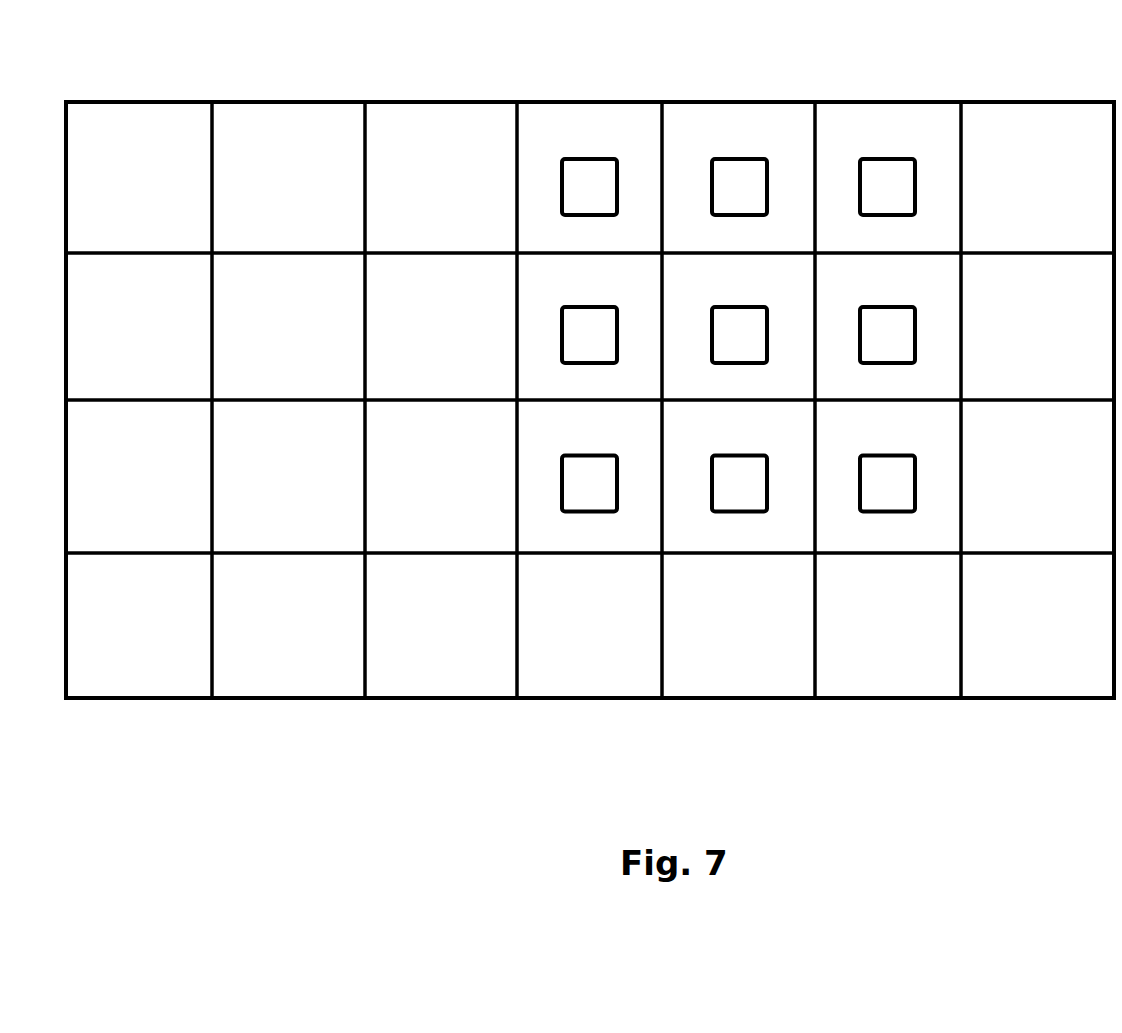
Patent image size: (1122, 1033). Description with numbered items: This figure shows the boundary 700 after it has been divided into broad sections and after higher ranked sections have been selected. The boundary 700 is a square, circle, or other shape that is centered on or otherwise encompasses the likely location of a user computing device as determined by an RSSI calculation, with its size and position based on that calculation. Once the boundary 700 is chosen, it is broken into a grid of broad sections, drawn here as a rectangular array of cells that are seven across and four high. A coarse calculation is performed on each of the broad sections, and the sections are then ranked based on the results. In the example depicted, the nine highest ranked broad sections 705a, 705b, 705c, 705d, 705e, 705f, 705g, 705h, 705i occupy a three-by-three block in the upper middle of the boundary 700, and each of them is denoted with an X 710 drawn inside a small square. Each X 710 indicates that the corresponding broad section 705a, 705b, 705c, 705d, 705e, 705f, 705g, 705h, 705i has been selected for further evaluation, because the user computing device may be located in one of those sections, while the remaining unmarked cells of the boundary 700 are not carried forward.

The boundary 700 is at (123, 88).
The broad section 705a is at (582, 122).
The broad section 705b is at (723, 164).
The broad section 705c is at (872, 164).
The broad section 705d is at (577, 314).
The broad section 705e is at (723, 314).
The broad section 705f is at (872, 314).
The broad section 705g is at (577, 461).
The broad section 705h is at (723, 461).
The broad section 705i is at (872, 461).
The X 710 is at (598, 150).